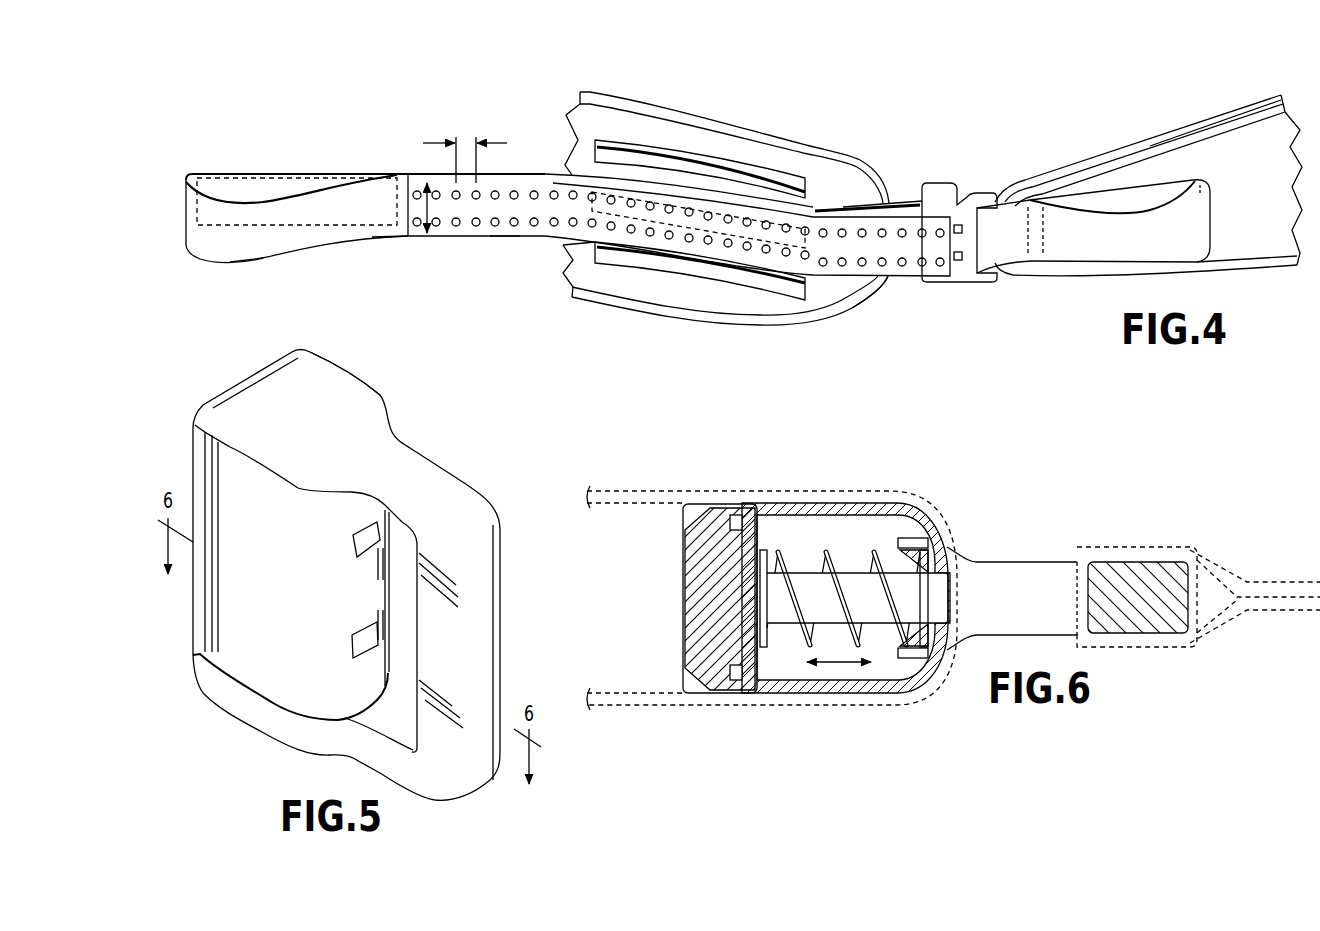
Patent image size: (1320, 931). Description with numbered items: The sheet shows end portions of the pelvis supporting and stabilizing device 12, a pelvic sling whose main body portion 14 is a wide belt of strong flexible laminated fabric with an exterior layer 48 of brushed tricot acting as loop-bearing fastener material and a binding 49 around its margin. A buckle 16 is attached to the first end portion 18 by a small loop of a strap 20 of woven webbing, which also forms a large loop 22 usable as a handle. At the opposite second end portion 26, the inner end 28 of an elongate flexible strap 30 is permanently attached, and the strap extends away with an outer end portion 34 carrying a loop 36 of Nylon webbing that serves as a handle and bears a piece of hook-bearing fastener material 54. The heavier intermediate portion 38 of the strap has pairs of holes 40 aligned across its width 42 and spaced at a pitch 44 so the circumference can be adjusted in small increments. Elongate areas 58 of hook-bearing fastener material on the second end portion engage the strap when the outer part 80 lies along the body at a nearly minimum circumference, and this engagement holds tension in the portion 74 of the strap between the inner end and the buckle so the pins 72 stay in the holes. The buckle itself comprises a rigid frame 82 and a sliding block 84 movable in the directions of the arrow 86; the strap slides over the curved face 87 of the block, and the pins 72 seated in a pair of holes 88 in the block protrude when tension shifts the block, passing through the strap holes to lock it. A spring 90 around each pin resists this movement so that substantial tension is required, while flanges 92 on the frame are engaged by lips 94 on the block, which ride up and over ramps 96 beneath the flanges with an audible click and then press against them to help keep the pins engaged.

In FIG. 4, the pelvis supporting and stabilizing device 12 is at (1025, 121).
In FIG. 4, the main body portion 14 is at (712, 128).
In FIG. 4, the buckle 16 is at (947, 188).
In FIG. 5, the buckle 16 is at (430, 418).
In FIG. 6, the buckle 16 is at (982, 480).
In FIG. 4, the first end portion 18 is at (1143, 185).
In FIG. 4, the strap 20 is at (1072, 250).
In FIG. 6, the strap 20 is at (1273, 580).
In FIG. 4, the large loop 22 is at (1201, 224).
In FIG. 4, the second end portion 26 is at (827, 293).
In FIG. 4, the inner end 28 is at (845, 207).
In FIG. 4, the elongate flexible strap 30 is at (616, 178).
In FIG. 6, the elongate flexible strap 30 is at (668, 488).
In FIG. 4, the outer end portion 34 is at (372, 239).
In FIG. 4, the loop 36 is at (243, 256).
In FIG. 4, the intermediate portion 38 is at (456, 240).
In FIG. 4, the holes 40 is at (533, 190).
In FIG. 4, the width 42 is at (424, 207).
In FIG. 4, the pitch 44 is at (437, 138).
In FIG. 4, the exterior layer 48 is at (856, 286).
In FIG. 4, the binding 49 is at (1255, 122).
In FIG. 4, the hook-bearing fastener material 54 is at (273, 170).
In FIG. 4, the area of hook-bearing fastener material 58 is at (776, 222).
In FIG. 4, the pins 72 is at (962, 226).
In FIG. 5, the pins 72 is at (353, 540).
In FIG. 6, the pins 72 is at (948, 607).
In FIG. 4, the portion 74 is at (906, 201).
In FIG. 6, the portion 74 is at (614, 488).
In FIG. 4, the outer part 80 is at (505, 239).
In FIG. 6, the outer part 80 is at (642, 707).
In FIG. 5, the rigid frame 82 is at (348, 362).
In FIG. 6, the rigid frame 82 is at (1030, 562).
In FIG. 5, the sliding block 84 is at (268, 685).
In FIG. 6, the sliding block 84 is at (845, 503).
In FIG. 6, the arrow 86 is at (837, 664).
In FIG. 5, the curved face 87 is at (368, 672).
In FIG. 6, the curved face 87 is at (953, 562).
In FIG. 5, the holes 88 is at (376, 622).
In FIG. 6, the holes 88 is at (948, 587).
In FIG. 6, the spring 90 is at (848, 587).
In FIG. 6, the flanges 92 is at (741, 514).
In FIG. 6, the lips 94 is at (753, 682).
In FIG. 5, the ramps 96 is at (207, 627).
In FIG. 6, the ramps 96 is at (710, 506).